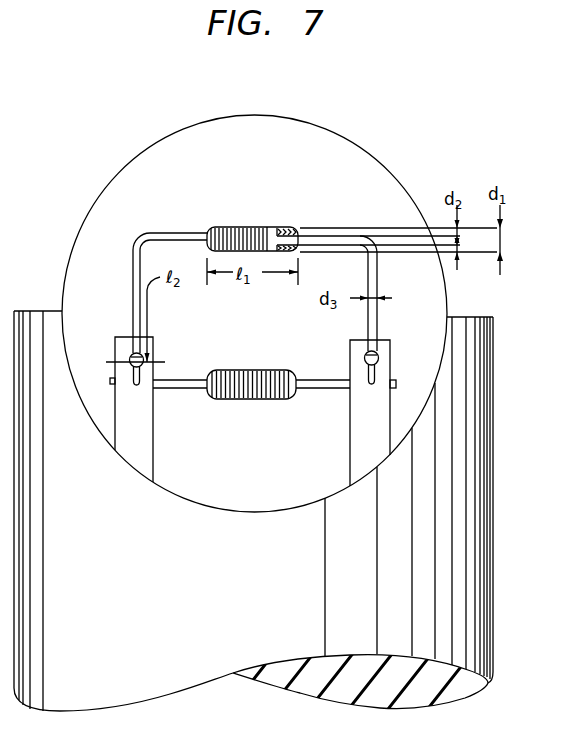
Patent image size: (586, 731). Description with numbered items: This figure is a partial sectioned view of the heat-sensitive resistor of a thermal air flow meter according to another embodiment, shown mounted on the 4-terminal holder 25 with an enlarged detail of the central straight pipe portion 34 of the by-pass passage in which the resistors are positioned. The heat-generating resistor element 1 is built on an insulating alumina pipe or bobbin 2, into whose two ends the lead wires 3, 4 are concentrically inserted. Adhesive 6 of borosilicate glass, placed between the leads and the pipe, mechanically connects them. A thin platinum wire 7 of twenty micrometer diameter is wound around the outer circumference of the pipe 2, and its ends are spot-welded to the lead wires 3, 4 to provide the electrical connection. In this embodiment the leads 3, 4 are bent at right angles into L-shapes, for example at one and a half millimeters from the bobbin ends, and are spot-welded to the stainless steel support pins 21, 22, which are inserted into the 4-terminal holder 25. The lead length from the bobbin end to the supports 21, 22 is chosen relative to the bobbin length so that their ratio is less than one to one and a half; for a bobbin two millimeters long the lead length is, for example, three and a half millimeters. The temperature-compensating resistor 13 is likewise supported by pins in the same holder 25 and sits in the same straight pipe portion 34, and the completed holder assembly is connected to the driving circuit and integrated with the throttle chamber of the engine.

The heat-generating resistor element 1 is at (240, 228).
The alumina pipe or bobbin 2 is at (279, 228).
The lead wire 3 is at (163, 233).
The lead wire 4 is at (347, 236).
The adhesive 6 is at (292, 227).
The thin platinum wire 7 is at (221, 228).
The temperature-compensating resistor 13 is at (250, 380).
The support pin 21 is at (385, 352).
The support pin 22 is at (123, 345).
The 4-terminal holder 25 is at (475, 510).
The central straight pipe portion 34 is at (143, 153).